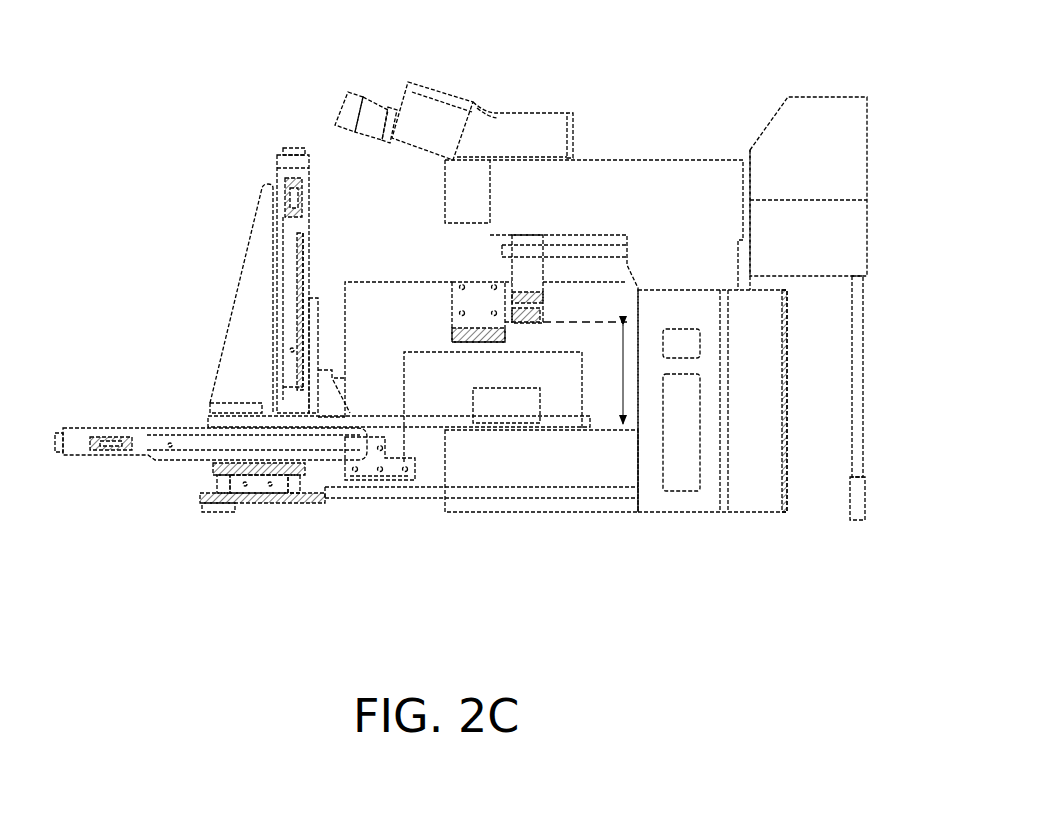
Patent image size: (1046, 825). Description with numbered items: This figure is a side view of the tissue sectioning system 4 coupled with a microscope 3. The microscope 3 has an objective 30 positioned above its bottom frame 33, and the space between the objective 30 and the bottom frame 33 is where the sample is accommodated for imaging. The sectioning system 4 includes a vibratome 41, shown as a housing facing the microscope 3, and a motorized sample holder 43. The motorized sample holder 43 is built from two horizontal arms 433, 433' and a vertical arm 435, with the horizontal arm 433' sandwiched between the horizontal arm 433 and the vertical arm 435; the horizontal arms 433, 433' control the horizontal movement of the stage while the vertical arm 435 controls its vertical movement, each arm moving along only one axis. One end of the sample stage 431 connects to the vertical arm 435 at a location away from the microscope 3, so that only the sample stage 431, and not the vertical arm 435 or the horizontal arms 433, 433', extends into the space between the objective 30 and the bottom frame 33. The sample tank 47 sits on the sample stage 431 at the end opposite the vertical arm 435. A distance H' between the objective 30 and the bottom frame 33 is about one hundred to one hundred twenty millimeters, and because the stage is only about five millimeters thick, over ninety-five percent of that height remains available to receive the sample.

The microscope 3 is at (657, 158).
The objective 30 is at (535, 268).
The vibratome 41 is at (447, 280).
The sample tank 47 is at (523, 400).
The sample stage 431 is at (432, 427).
The bottom frame 33 is at (597, 462).
The tissue sectioning system 4 is at (207, 265).
The vertical arm 435 is at (287, 173).
The motorized sample holder 43 is at (165, 470).
The horizontal arm 433' is at (211, 406).
The horizontal arm 433 is at (262, 529).